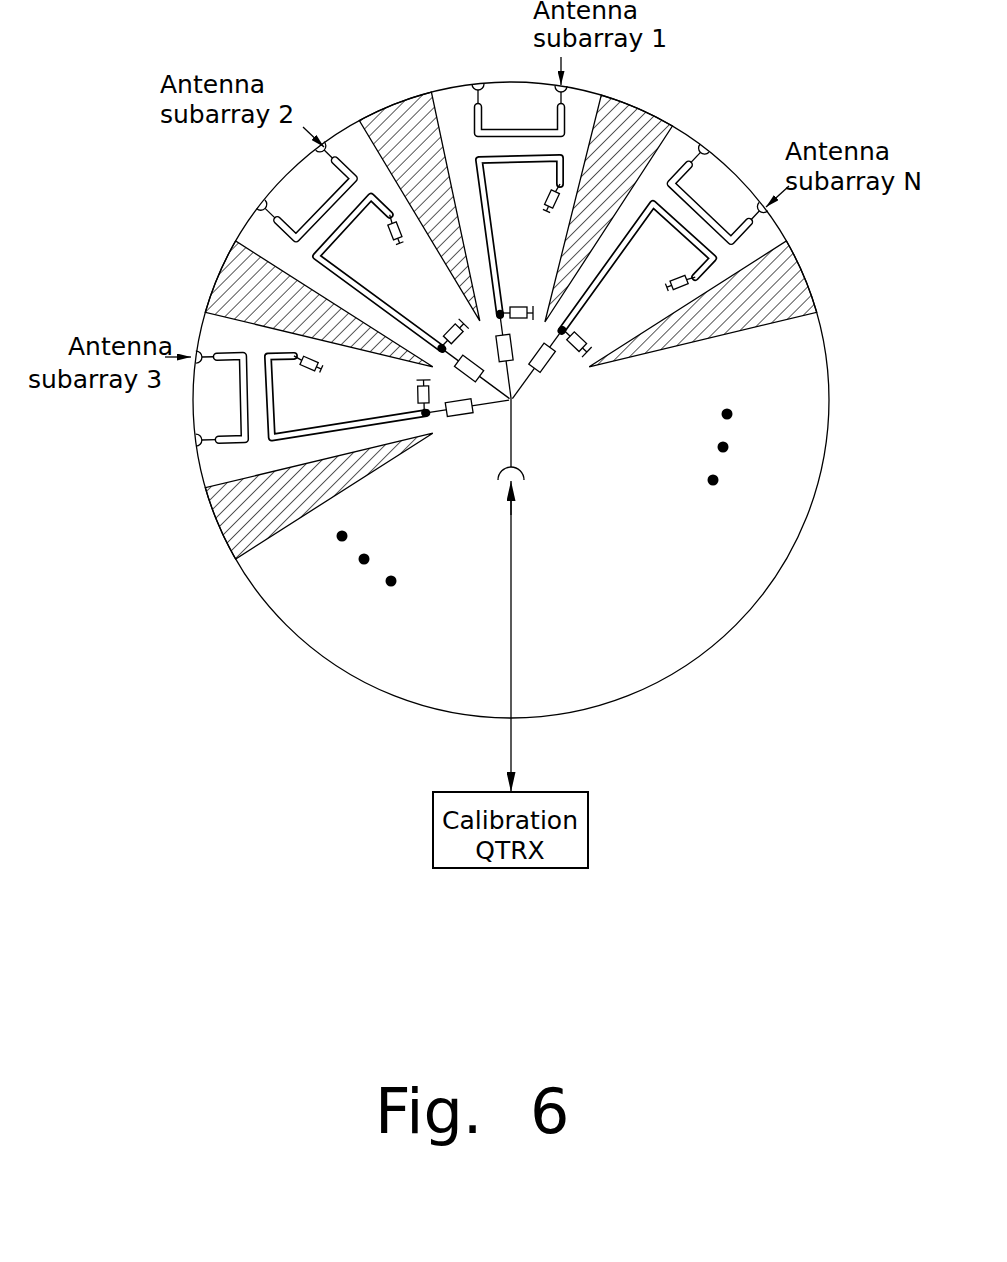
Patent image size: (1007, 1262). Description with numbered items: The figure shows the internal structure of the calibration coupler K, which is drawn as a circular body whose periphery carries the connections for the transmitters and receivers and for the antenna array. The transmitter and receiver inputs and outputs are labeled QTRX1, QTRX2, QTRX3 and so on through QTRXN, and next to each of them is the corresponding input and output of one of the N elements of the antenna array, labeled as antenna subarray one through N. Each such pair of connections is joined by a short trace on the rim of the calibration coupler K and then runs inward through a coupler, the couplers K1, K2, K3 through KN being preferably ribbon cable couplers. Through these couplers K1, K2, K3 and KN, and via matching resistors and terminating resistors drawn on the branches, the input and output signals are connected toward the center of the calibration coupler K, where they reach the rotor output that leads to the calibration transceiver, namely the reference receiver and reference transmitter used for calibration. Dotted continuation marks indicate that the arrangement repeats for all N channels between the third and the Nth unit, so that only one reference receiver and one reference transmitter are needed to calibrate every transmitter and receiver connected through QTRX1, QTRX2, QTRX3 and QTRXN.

The calibration coupler K is at (262, 633).
The coupler K1 is at (538, 227).
The coupler K2 is at (381, 282).
The coupler K3 is at (337, 413).
The coupler KN is at (628, 274).
The transmitter and receiver input and output QTRX1 is at (478, 84).
The transmitter and receiver input and output QTRX2 is at (258, 204).
The transmitter and receiver input and output QTRX3 is at (191, 440).
The transmitter and receiver input and output QTRXN is at (707, 149).